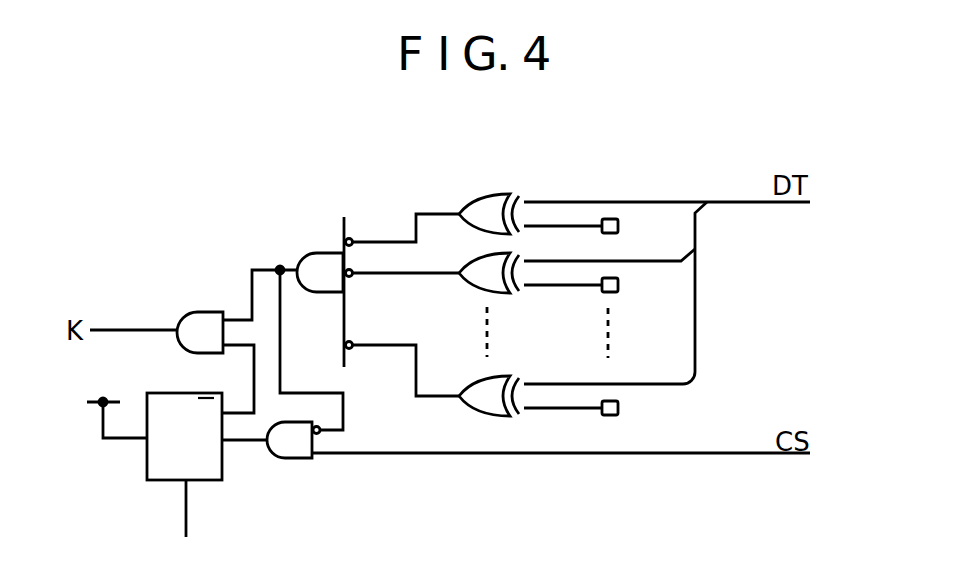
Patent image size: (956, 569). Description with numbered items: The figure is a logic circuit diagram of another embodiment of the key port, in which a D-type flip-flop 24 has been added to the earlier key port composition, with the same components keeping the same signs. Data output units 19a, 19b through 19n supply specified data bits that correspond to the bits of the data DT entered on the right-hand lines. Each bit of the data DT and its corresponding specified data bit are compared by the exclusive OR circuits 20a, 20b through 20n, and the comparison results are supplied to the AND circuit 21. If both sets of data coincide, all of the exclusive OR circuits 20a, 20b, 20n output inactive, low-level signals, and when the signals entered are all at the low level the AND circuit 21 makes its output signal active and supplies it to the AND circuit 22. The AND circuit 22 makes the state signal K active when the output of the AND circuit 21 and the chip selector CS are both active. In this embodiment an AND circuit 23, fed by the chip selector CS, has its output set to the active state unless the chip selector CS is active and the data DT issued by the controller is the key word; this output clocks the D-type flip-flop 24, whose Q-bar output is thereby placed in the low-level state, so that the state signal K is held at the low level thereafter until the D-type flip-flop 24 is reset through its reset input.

The data output unit 19a is at (619, 226).
The data output unit 19b is at (619, 286).
The data output unit 19n is at (619, 409).
The exclusive OR circuit 20a is at (494, 194).
The exclusive OR circuit 20b is at (473, 262).
The exclusive OR circuit 20n is at (467, 406).
The AND circuit 21 is at (315, 253).
The AND circuit 22 is at (197, 312).
The AND circuit 23 is at (283, 459).
The D-type flip-flop 24 is at (153, 481).